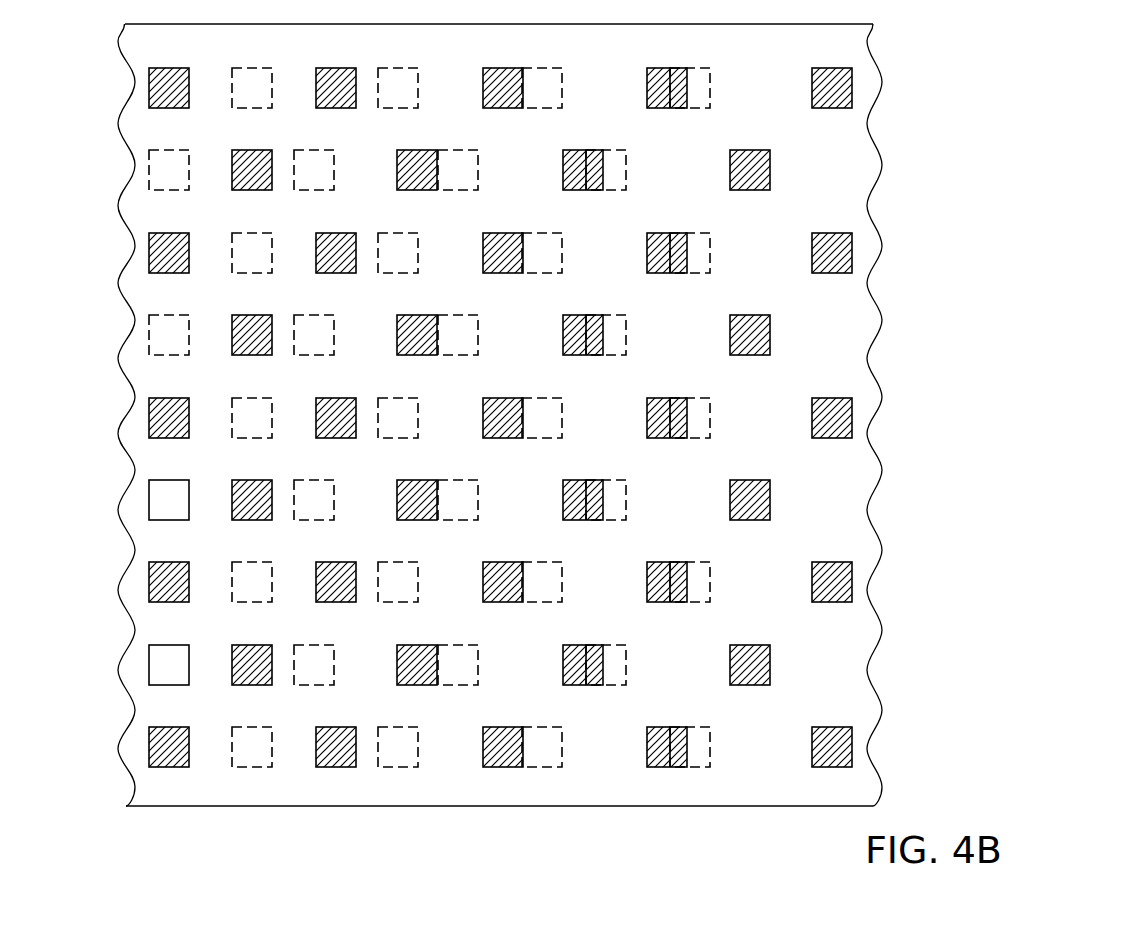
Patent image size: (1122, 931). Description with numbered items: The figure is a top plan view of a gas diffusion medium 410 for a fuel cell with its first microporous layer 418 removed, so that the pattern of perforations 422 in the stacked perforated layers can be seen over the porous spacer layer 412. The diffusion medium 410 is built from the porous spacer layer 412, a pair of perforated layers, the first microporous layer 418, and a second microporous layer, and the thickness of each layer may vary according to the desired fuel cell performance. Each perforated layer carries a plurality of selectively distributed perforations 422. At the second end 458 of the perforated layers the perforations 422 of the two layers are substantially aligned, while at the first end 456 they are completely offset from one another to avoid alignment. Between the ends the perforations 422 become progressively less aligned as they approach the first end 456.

The diffusion medium 410 is at (1017, 63).
The porous spacer layer 412 is at (840, 88).
The first microporous layer 418 is at (138, 203).
The perforations 422 is at (843, 428).
The first end 456 is at (770, 816).
The second end 458 is at (157, 816).